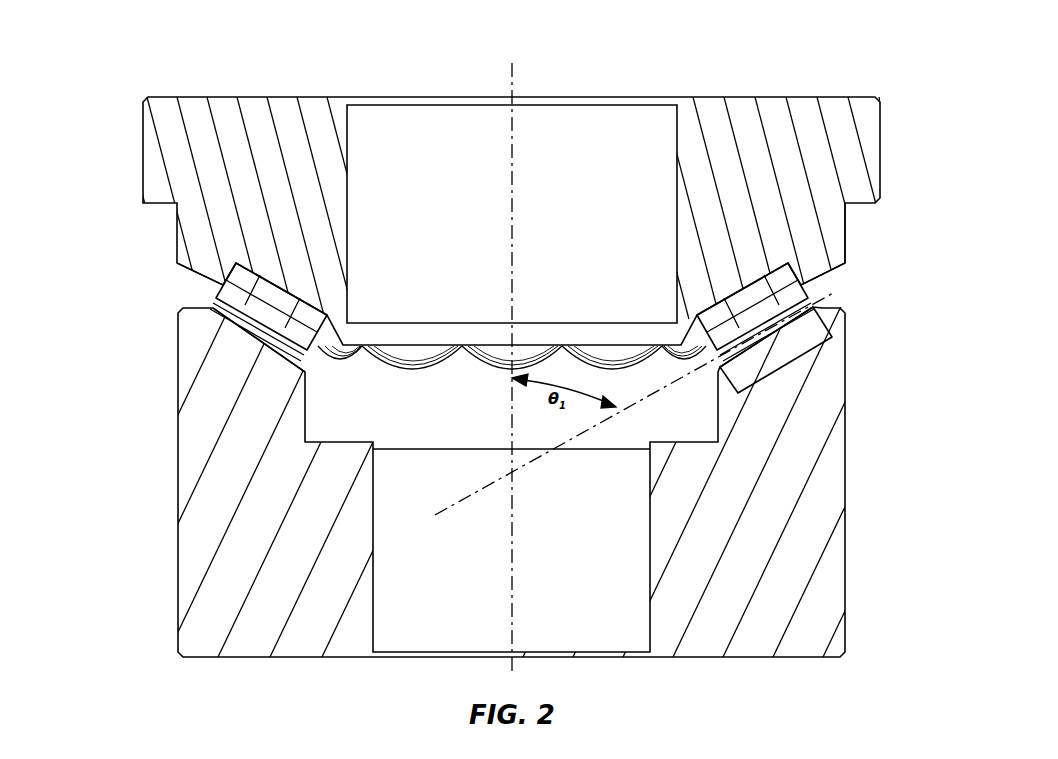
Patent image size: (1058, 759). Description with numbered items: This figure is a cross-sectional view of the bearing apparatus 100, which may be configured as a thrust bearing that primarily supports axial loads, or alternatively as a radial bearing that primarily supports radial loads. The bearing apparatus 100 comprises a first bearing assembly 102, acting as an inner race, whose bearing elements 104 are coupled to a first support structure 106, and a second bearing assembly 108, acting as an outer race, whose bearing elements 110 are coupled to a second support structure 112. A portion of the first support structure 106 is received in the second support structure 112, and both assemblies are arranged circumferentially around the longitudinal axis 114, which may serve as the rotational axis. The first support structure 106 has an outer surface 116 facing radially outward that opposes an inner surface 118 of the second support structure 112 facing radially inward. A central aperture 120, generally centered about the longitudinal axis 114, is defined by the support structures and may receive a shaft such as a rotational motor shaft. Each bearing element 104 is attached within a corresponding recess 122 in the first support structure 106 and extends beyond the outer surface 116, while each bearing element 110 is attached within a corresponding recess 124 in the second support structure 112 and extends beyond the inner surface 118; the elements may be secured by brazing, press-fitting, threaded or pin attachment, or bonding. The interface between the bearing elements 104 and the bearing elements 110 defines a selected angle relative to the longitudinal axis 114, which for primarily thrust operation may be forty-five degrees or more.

The bearing apparatus 100 is at (222, 68).
The first bearing assembly 102 is at (810, 137).
The bearing elements 104 is at (217, 287).
The first support structure 106 is at (210, 268).
The second bearing assembly 108 is at (815, 600).
The bearing elements 110 is at (235, 333).
The second support structure 112 is at (240, 382).
The longitudinal axis 114 is at (514, 84).
The outer surface 116 is at (810, 286).
The inner surface 118 is at (812, 300).
The central aperture 120 is at (470, 100).
The recess 122 is at (745, 290).
The recess 124 is at (783, 365).